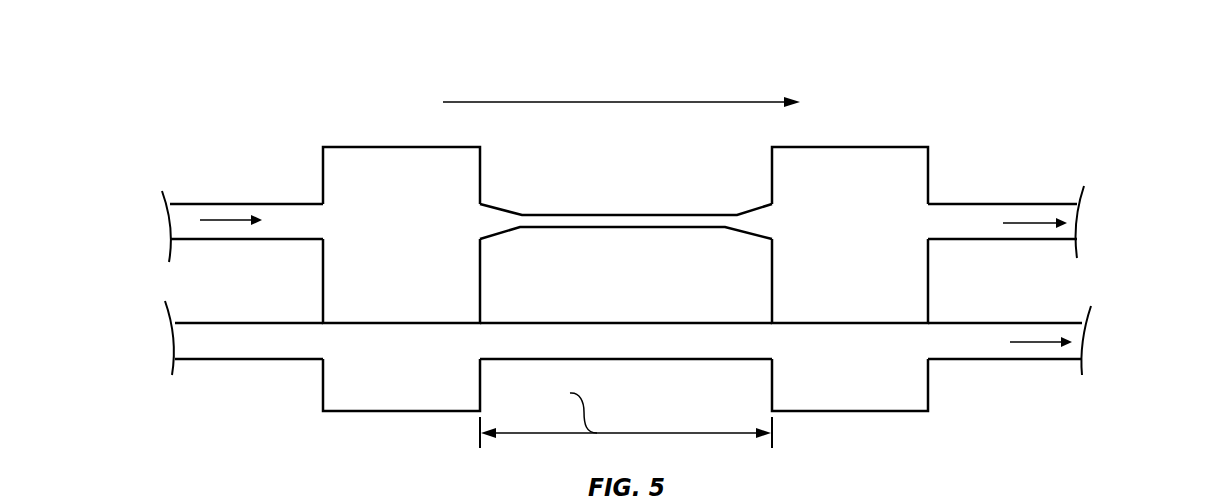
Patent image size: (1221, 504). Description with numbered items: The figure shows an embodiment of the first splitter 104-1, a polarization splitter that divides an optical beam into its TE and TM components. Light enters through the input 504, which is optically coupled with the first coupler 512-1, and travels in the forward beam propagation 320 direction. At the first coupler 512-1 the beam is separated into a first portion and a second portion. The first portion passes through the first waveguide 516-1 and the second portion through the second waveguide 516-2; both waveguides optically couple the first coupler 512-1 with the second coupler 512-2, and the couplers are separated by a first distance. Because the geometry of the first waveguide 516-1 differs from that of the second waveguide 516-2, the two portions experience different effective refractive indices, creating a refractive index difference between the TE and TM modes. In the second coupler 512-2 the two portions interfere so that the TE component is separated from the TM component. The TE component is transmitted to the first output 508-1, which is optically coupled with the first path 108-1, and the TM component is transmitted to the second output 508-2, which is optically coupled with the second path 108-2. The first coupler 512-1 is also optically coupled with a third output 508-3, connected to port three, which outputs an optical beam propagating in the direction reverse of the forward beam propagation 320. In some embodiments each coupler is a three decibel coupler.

The first splitter 104-1 is at (977, 105).
The forward beam propagation 320 is at (628, 102).
The input 504 is at (280, 227).
The first output 508-1 is at (1050, 237).
The second output 508-2 is at (1057, 355).
The third output 508-3 is at (285, 348).
The first coupler 512-1 is at (350, 402).
The second coupler 512-2 is at (822, 402).
The first waveguide 516-1 is at (727, 222).
The second waveguide 516-2 is at (717, 352).
The first path 108-1 is at (1133, 222).
The second path 108-2 is at (1136, 340).